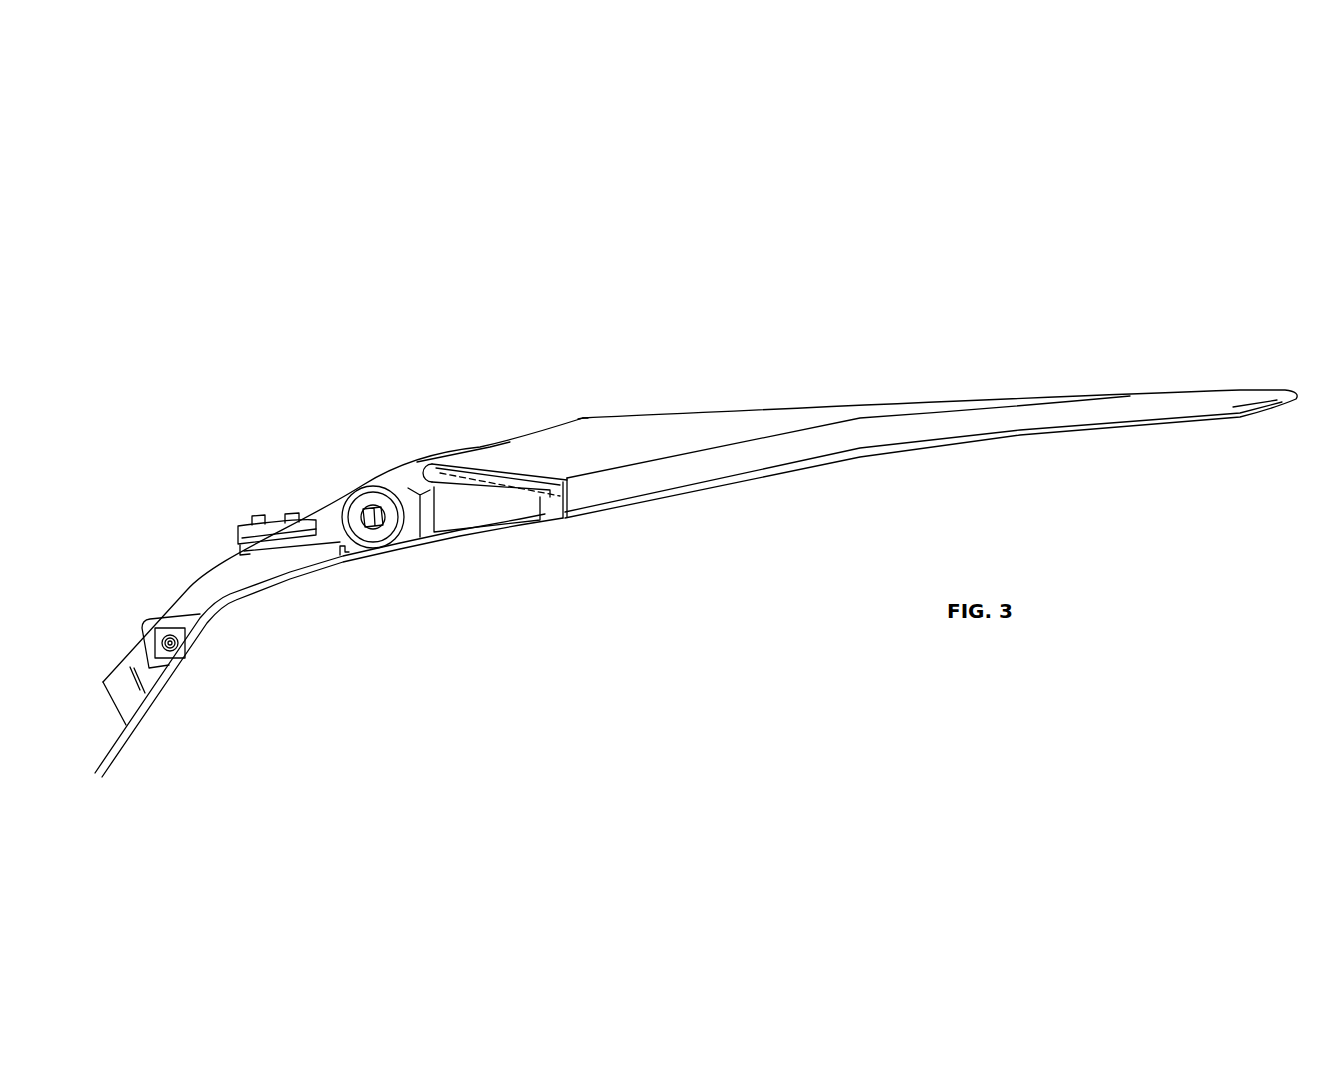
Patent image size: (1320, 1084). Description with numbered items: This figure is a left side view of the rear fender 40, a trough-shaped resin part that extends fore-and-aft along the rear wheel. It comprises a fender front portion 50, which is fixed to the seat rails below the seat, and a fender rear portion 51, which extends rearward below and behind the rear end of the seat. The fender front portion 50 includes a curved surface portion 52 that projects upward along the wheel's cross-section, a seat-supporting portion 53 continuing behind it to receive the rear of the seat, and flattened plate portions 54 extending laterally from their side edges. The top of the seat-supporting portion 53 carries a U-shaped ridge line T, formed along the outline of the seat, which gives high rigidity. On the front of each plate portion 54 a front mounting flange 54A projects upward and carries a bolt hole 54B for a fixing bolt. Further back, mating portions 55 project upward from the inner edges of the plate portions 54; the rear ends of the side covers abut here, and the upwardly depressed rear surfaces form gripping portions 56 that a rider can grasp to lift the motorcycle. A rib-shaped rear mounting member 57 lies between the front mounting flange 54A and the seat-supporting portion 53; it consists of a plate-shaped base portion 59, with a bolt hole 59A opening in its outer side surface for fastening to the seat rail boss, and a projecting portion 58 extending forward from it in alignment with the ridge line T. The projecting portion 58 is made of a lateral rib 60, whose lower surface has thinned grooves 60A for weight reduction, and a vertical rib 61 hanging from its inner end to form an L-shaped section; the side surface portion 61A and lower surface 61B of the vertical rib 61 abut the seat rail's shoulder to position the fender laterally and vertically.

The rear fender 40 is at (848, 288).
The fender front portion 50 is at (214, 564).
The fender rear portion 51 is at (987, 393).
The curved surface portion 52 is at (398, 490).
The seat-supporting portion 53 is at (510, 442).
The ridge line T is at (582, 417).
The plate portions 54 is at (325, 558).
The front mounting flanges 54A is at (170, 665).
The bolt holes 54B is at (188, 652).
The mating portions 55 is at (490, 488).
The gripping portions 56 is at (517, 490).
The rear mounting members 57 is at (363, 483).
The projecting portion 58 is at (328, 505).
The base portion 59 is at (420, 540).
The bolt hole 59A is at (373, 522).
The lateral rib 60 is at (247, 522).
The thinned grooves 60A is at (268, 540).
The vertical rib 61 is at (287, 552).
The side surface portion 61A is at (243, 556).
The lower surface 61B is at (346, 554).